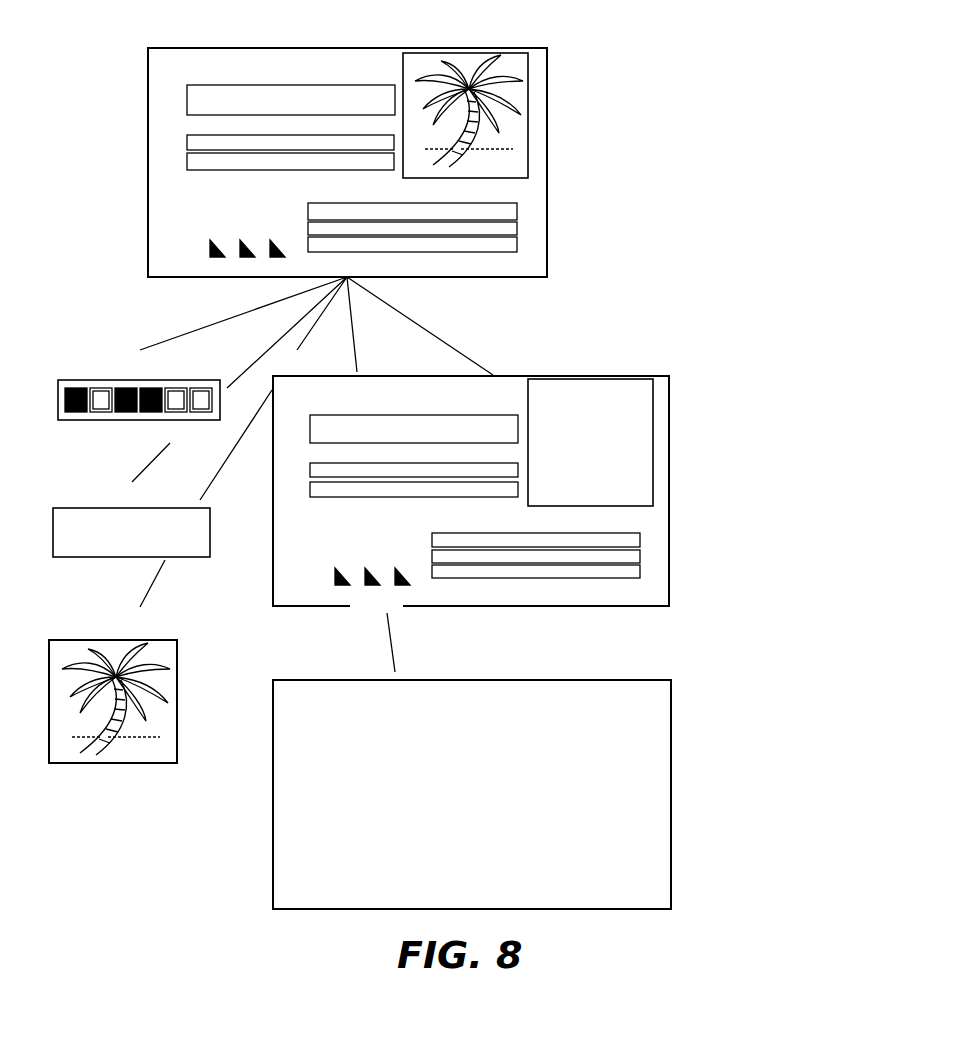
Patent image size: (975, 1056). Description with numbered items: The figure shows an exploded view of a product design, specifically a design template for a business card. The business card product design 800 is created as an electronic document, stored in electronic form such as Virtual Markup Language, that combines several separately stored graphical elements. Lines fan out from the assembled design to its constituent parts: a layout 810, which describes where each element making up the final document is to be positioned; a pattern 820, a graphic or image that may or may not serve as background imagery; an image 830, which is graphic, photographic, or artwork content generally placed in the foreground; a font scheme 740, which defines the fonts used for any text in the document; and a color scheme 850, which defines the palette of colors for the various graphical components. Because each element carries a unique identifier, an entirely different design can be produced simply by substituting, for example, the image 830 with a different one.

The business card product design 800 is at (148, 110).
The color scheme 850 is at (178, 380).
The font scheme FS-4 740 is at (150, 507).
The image 830 is at (150, 640).
The layout 810 is at (513, 376).
The pattern 820 is at (492, 680).